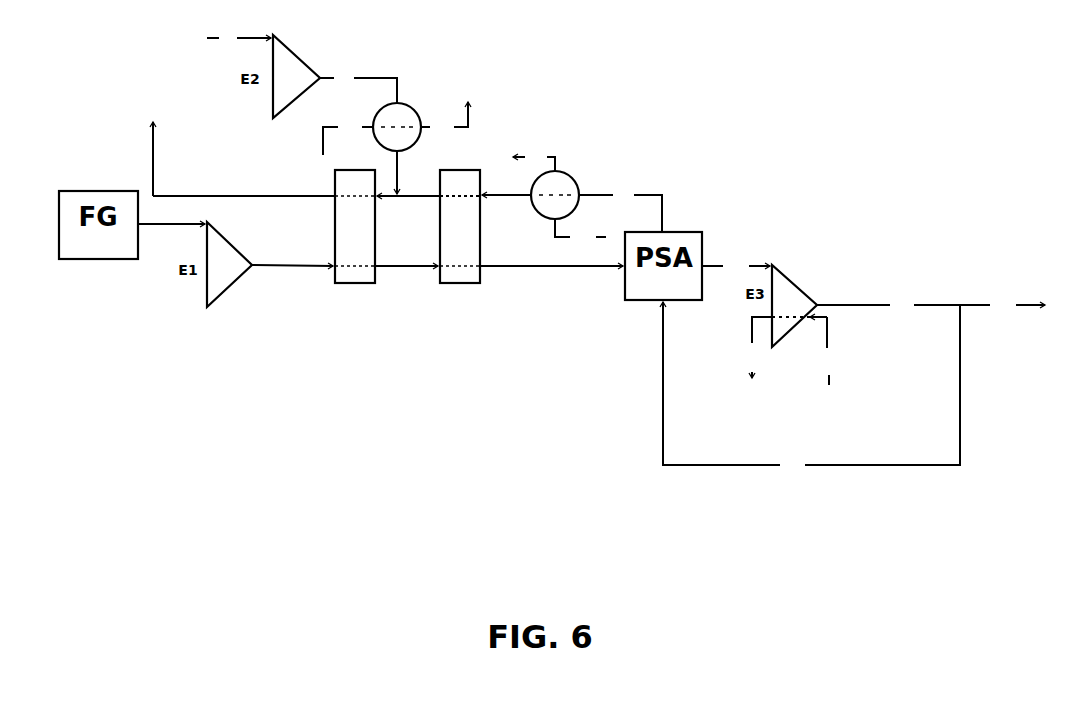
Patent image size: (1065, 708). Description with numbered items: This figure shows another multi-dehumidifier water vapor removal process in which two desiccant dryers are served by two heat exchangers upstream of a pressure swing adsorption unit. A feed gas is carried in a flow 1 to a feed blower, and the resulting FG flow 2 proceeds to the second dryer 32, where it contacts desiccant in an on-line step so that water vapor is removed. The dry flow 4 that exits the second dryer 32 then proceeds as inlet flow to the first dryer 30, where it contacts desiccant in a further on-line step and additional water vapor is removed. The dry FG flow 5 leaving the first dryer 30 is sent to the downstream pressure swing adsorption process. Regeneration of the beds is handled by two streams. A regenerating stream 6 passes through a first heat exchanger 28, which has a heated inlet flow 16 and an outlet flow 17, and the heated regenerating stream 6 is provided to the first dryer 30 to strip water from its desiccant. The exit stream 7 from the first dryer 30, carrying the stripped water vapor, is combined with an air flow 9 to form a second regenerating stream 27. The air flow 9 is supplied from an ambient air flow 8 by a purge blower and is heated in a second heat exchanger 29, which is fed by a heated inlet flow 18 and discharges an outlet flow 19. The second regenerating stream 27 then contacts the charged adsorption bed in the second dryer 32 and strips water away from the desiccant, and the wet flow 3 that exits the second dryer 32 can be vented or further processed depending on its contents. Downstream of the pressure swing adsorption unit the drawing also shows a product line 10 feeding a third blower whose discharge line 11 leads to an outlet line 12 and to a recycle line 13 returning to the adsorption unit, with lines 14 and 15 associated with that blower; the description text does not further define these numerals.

The feed gas flow 1 is at (171, 225).
The FG flow 2 is at (292, 267).
The wet flow 3 is at (244, 164).
The dry flow 4 is at (406, 267).
The dry FG flow 5 is at (551, 267).
The regenerating stream 6 is at (620, 209).
The exit stream 7 is at (453, 178).
The ambient air flow 8 is at (239, 39).
The air flow 9 is at (358, 86).
The PSA product gas line 10 is at (736, 267).
The compressed product gas line 11 is at (888, 307).
The product gas outlet line 12 is at (1002, 306).
The recycle gas line 13 is at (811, 388).
The cooling fluid inlet line 14 is at (830, 351).
The cooling fluid outlet line 15 is at (784, 347).
The inlet flow 16 is at (580, 233).
The outlet flow 17 is at (534, 160).
The heated inlet flow 18 is at (348, 137).
The outlet flow 19 is at (444, 119).
The second regenerating stream 27 is at (390, 200).
The first heat exchanger 28 is at (562, 183).
The second heat exchanger 29 is at (410, 108).
The first dryer 30 is at (462, 252).
The second dryer 32 is at (352, 252).